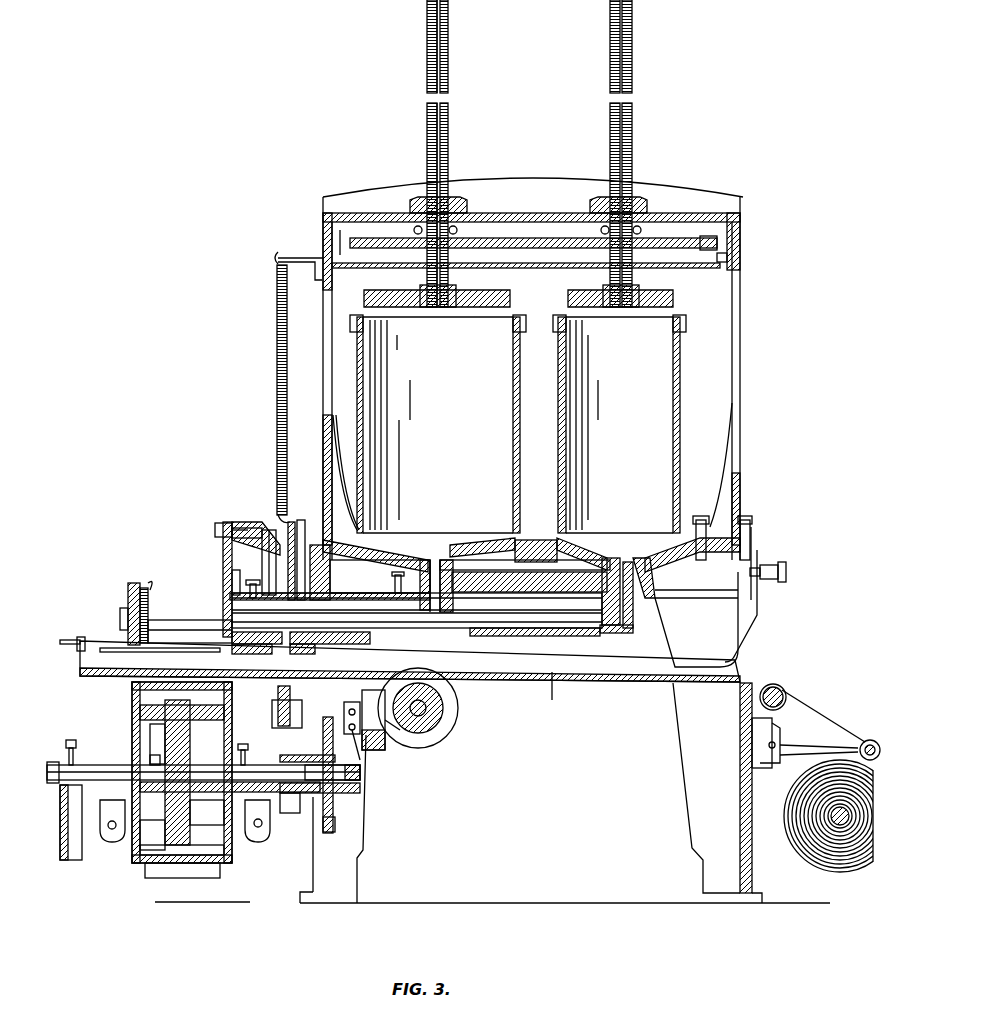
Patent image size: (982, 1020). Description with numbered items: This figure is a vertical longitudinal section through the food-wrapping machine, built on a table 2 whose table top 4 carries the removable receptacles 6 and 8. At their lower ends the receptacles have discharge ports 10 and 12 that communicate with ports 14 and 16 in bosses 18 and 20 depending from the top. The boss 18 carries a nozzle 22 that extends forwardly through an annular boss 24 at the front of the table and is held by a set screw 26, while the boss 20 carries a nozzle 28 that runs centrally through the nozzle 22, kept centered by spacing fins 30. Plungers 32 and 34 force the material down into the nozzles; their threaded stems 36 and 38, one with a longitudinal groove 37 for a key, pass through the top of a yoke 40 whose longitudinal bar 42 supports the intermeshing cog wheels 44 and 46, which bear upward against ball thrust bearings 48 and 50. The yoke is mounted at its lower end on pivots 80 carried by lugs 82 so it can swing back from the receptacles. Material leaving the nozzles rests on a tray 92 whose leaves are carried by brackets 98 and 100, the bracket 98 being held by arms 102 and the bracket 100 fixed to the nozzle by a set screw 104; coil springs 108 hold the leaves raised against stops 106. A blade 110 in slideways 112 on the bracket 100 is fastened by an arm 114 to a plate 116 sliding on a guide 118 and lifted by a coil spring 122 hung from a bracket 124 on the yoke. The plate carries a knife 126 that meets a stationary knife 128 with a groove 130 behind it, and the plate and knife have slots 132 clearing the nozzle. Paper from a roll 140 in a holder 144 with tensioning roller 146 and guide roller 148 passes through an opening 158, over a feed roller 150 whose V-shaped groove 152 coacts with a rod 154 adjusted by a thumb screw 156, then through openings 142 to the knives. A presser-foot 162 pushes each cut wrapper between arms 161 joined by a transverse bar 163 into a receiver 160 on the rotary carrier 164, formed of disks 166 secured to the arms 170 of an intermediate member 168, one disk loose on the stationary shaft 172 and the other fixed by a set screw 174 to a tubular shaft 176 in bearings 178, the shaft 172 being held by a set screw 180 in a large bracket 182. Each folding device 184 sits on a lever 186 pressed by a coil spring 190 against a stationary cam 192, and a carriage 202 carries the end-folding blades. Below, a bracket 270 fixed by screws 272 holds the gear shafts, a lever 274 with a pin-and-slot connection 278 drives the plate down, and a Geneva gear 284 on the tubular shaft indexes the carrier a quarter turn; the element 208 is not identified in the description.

The table 2 is at (690, 816).
The table top 4 is at (540, 540).
The receptacle 6 is at (438, 425).
The receptacle 8 is at (619, 425).
The discharge port 10 is at (436, 575).
The discharge port 12 is at (621, 565).
The port 14 is at (450, 572).
The port 16 is at (630, 595).
The boss 18 is at (470, 631).
The boss 20 is at (640, 628).
The nozzle 22 is at (374, 593).
The annular boss 24 is at (307, 540).
The set screw 26 is at (301, 520).
The nozzle 28 is at (590, 622).
The spacing fins 30 is at (330, 636).
The plunger 32 is at (472, 310).
The plunger 34 is at (640, 312).
The threaded stem 36 is at (427, 24).
The longitudinal groove 37 is at (437, 58).
The threaded stem 38 is at (632, 50).
The yoke 40 is at (522, 213).
The longitudinal bar 42 is at (540, 268).
The cog wheel 44 is at (345, 240).
The cog wheel 46 is at (740, 245).
The ball thrust bearing 48 is at (418, 230).
The ball thrust bearing 50 is at (640, 228).
The pivot 80 is at (748, 528).
The lug 82 is at (752, 535).
The tray 92 is at (176, 632).
The bracket 98 is at (128, 586).
The bracket 100 is at (266, 581).
The arms 102 is at (148, 605).
The set screw 104 is at (232, 575).
The stops 106 is at (120, 628).
The coil spring 108 is at (152, 590).
The blade 110 is at (223, 522).
The slideways 112 is at (223, 548).
The arm 114 is at (270, 522).
The plate 116 is at (280, 515).
The guide 118 is at (252, 528).
The coil spring 122 is at (277, 316).
The bracket 124 is at (300, 258).
The knife 126 is at (285, 653).
The stationary knife 128 is at (280, 704).
The groove 130 is at (298, 668).
The slots 132 is at (275, 563).
The roll of paper 140 is at (833, 866).
The openings 142 is at (278, 688).
The holder 144 is at (778, 775).
The tensioning roller 146 is at (868, 740).
The guide roller 148 is at (780, 690).
The feed roller 150 is at (460, 698).
The V-shaped groove 152 is at (445, 718).
The rod 154 is at (571, 699).
The thumb screw 156 is at (778, 566).
The opening 158 is at (322, 694).
The receiver 160 is at (150, 686).
The arms 161 is at (77, 640).
The presser-foot 162 is at (164, 657).
The transverse bar 163 is at (80, 646).
The rotary carrier 164 is at (132, 706).
The disks 166 is at (140, 718).
The intermediate member 168 is at (185, 850).
The arms 170 is at (147, 838).
The stationary shaft 172 is at (50, 780).
The set screw 174 is at (248, 750).
The tubular shaft 176 is at (360, 778).
The bearings 178 is at (292, 800).
The set screw 180 is at (66, 742).
The bracket 182 is at (62, 836).
The folding device 184 is at (205, 830).
The lever 186 is at (190, 737).
The coil spring 190 is at (155, 740).
The cam 192 is at (150, 758).
The carriage 202 is at (102, 824).
The bearing 208 is at (262, 830).
The bracket 270 is at (382, 733).
The screws 272 is at (358, 740).
The lever 274 is at (307, 750).
The pin-and-slot connection 278 is at (343, 718).
The Geneva gear 284 is at (336, 825).